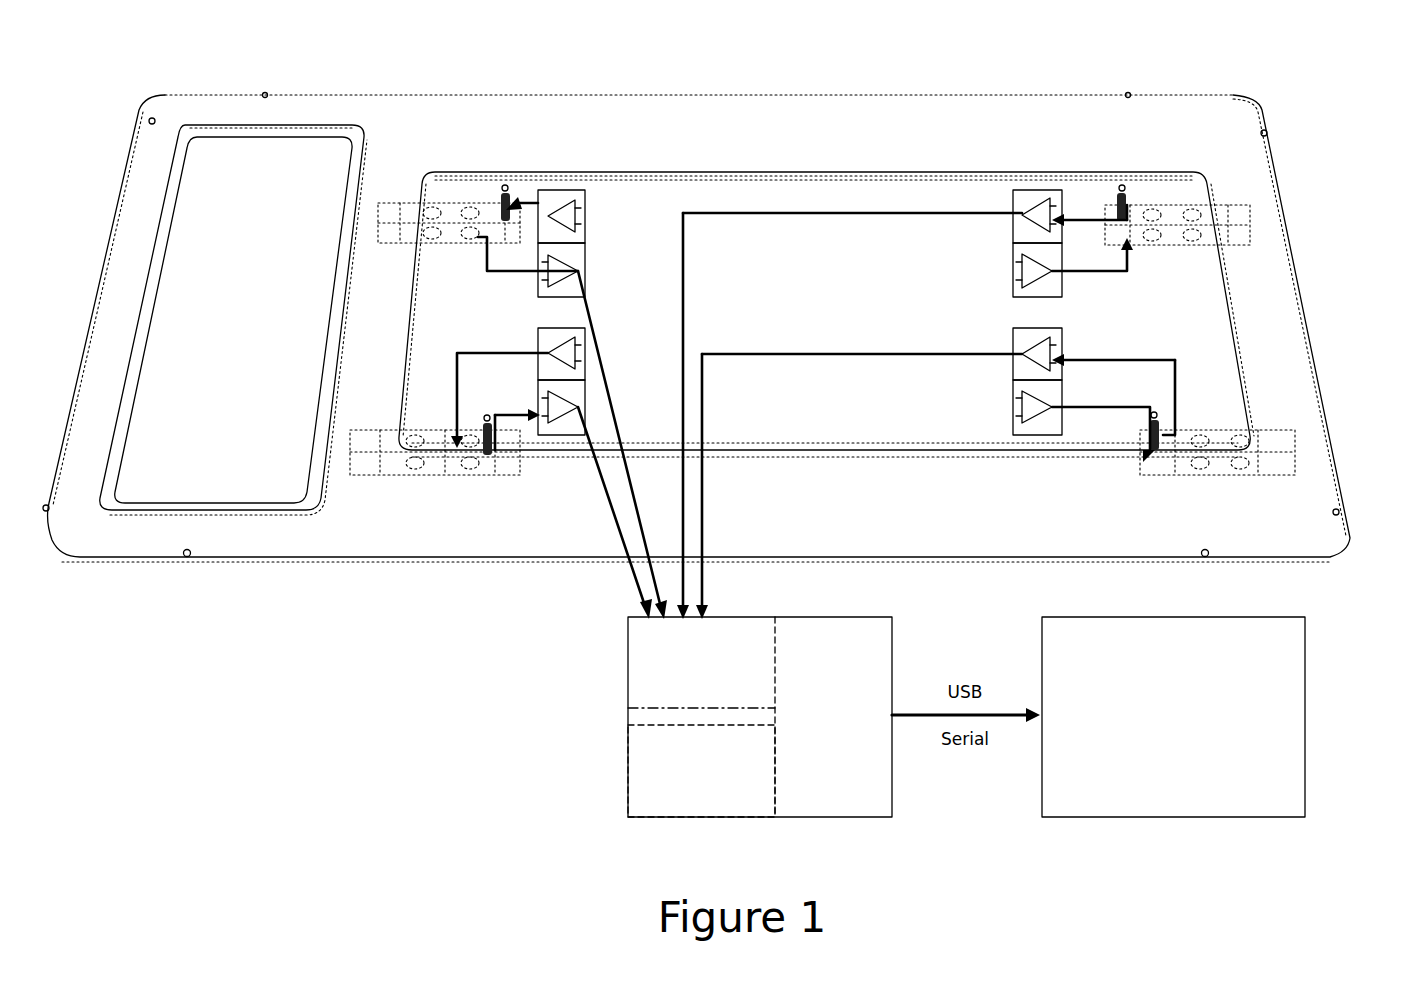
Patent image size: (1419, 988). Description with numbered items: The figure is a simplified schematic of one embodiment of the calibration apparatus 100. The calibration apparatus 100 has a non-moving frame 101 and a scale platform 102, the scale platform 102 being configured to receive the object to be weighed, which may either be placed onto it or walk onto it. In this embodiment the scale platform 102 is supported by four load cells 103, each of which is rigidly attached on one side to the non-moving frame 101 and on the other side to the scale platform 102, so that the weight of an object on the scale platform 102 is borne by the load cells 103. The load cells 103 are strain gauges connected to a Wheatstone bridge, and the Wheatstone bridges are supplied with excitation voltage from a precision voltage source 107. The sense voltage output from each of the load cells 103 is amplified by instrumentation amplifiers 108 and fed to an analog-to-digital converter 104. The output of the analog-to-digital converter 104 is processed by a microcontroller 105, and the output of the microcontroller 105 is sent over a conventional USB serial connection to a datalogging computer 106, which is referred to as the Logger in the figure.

The calibration apparatus 100 is at (696, 428).
The non-moving frame 101 is at (1223, 126).
The scale platform 102 is at (820, 194).
The load cell 103 is at (400, 236).
The analog-to-digital converter 104 is at (636, 622).
The microcontroller 105 is at (642, 765).
The datalogging computer 106 is at (1290, 667).
The precision voltage source 107 is at (572, 214).
The instrumentation amplifier 108 is at (585, 282).